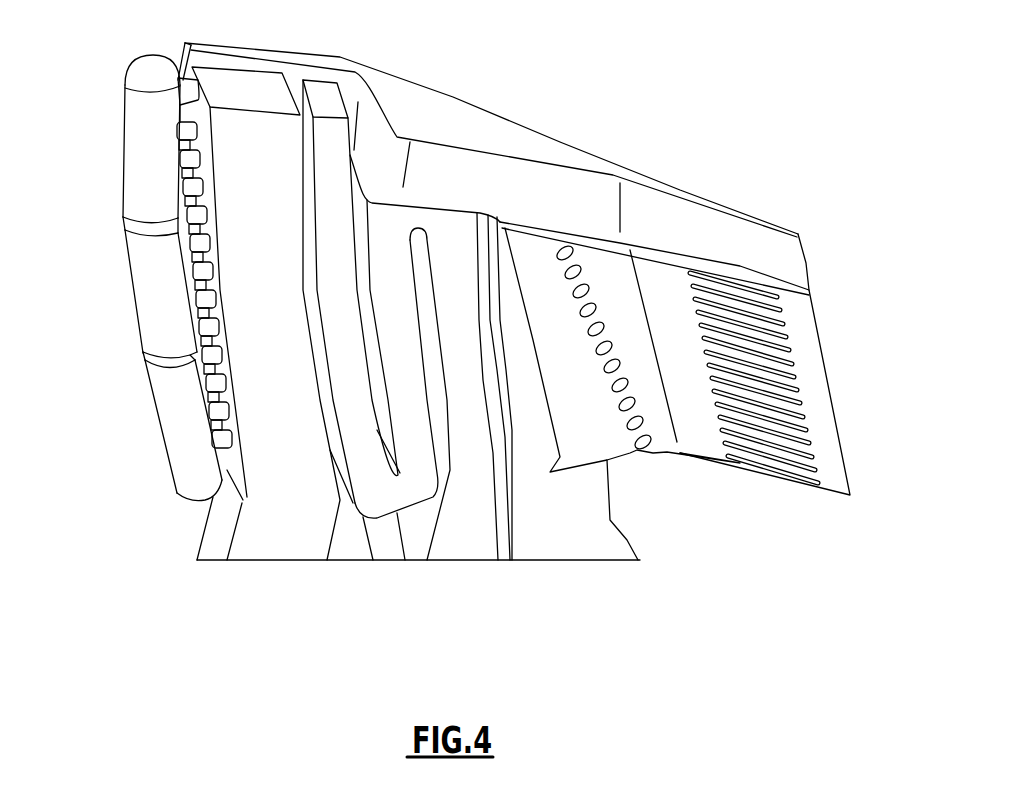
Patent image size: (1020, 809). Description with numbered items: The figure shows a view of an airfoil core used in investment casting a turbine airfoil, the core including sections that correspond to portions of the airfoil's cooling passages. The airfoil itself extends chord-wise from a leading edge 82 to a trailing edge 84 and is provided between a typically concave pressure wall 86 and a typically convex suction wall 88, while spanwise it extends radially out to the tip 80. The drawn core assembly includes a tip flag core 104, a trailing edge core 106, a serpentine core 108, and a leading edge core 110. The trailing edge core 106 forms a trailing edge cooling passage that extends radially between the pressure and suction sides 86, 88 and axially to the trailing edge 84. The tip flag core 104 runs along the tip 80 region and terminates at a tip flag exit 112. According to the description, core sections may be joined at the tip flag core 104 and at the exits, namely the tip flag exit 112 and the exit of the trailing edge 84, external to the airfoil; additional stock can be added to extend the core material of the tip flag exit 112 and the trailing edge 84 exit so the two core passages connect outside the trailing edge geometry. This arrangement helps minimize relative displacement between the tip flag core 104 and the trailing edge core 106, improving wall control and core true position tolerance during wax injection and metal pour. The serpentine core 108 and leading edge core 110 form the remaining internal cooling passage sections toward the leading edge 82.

The tip 80 is at (378, 88).
The leading edge 82 is at (128, 178).
The trailing edge 84 is at (820, 330).
The pressure wall 86 is at (537, 162).
The suction wall 88 is at (453, 97).
The tip flag core 104 is at (613, 175).
The trailing edge core 106 is at (702, 452).
The serpentine core 108 is at (380, 508).
The leading edge core 110 is at (277, 492).
The tip flag exit 112 is at (807, 262).